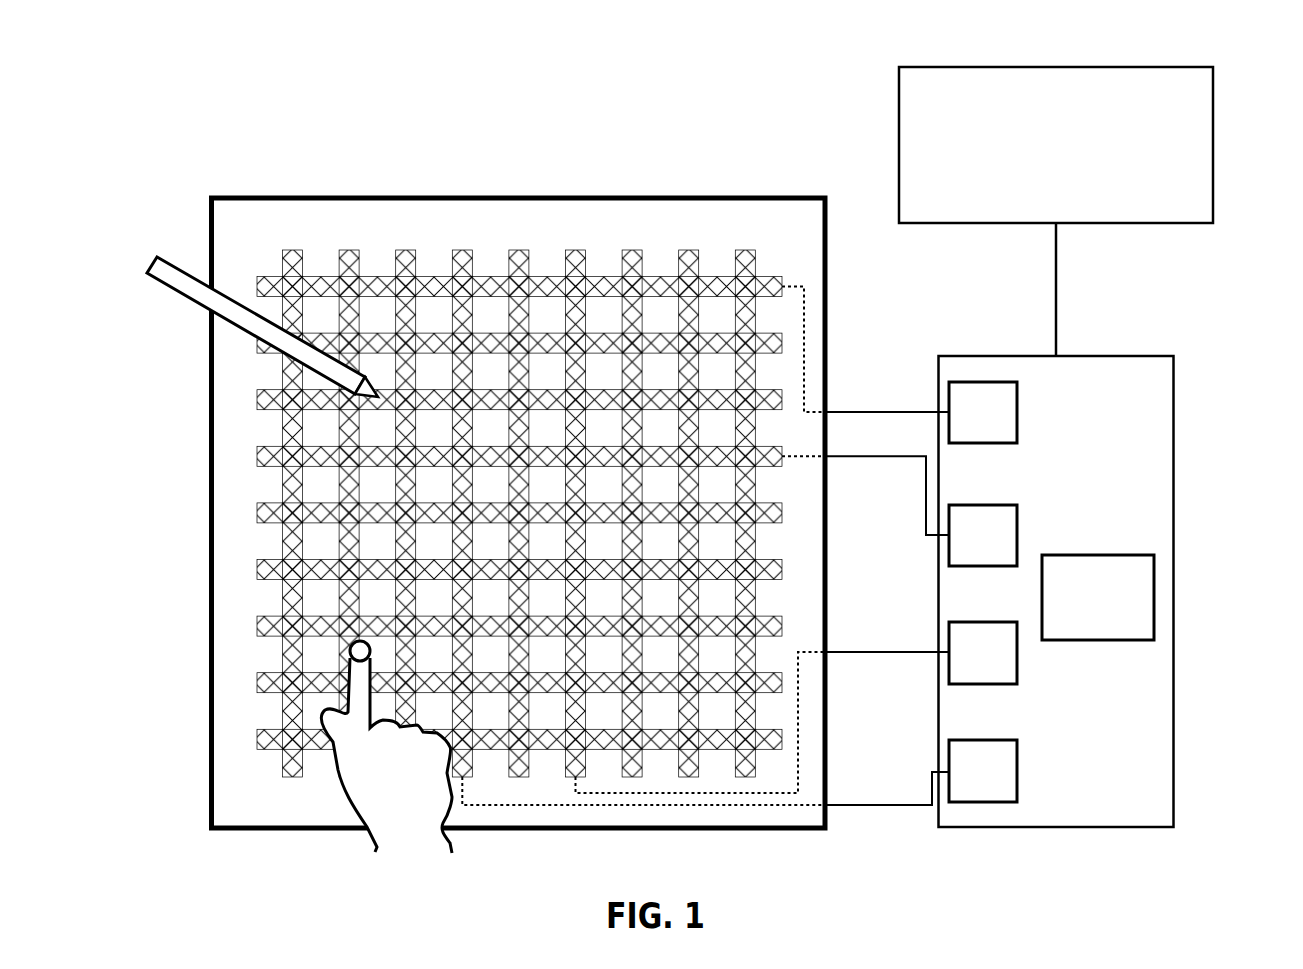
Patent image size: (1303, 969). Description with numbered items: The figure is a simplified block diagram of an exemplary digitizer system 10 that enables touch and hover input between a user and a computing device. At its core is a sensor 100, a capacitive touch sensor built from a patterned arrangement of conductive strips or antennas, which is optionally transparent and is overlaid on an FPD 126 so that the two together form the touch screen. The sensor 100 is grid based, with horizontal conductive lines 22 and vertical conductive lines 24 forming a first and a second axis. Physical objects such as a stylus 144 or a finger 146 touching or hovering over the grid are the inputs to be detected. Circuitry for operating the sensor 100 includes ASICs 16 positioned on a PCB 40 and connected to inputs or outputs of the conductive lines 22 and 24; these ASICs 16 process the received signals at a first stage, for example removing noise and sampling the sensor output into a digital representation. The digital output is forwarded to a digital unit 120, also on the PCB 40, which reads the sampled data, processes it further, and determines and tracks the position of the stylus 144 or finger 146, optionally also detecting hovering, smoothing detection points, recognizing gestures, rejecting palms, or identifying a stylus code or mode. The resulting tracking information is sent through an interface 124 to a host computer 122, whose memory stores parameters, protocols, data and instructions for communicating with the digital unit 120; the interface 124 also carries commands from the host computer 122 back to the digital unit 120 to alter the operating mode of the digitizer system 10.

The digitizer system 10 is at (713, 473).
The sensor 100 is at (490, 476).
The FPD 126 is at (602, 197).
The vertical conductive lines 24 is at (397, 248).
The horizontal conductive lines 22 is at (255, 463).
The stylus 144 is at (192, 275).
The finger 146 is at (356, 662).
The PCB 40 is at (1086, 591).
The ASICs 16 is at (1017, 413).
The digital unit 120 is at (1098, 551).
The interface 124 is at (1057, 298).
The host computer 122 is at (1215, 125).